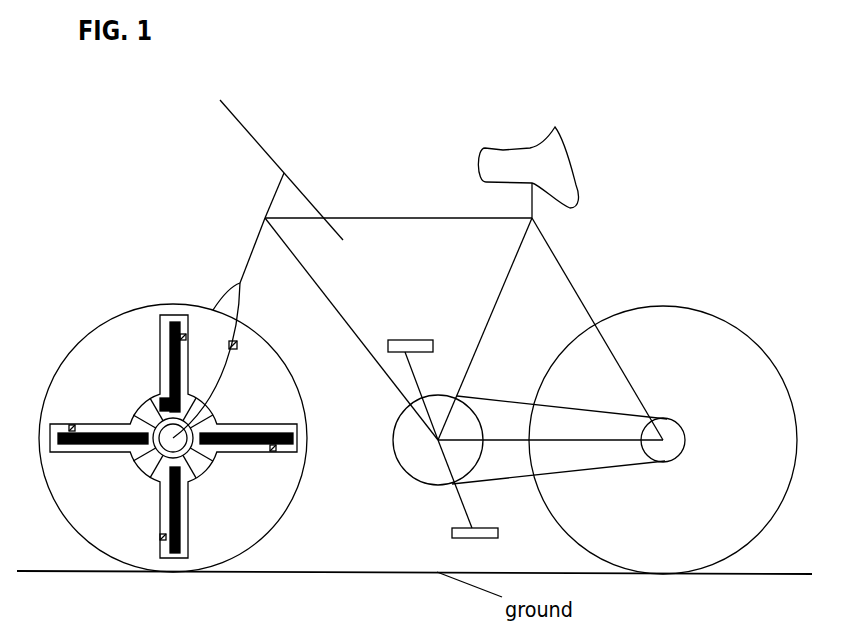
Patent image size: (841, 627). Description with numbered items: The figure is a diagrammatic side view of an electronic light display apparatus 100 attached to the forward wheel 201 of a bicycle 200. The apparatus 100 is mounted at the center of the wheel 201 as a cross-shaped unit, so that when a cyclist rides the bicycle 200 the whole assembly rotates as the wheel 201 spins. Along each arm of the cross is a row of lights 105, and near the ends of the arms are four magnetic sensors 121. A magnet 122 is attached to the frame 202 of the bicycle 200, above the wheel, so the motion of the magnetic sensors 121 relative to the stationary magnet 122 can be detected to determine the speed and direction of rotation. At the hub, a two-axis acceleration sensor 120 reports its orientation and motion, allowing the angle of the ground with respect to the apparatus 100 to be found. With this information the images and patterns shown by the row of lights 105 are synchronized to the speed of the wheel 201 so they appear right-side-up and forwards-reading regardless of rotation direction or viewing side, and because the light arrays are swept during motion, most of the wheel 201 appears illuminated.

The electronic light display apparatus 100 is at (107, 423).
The row of lights 105 is at (182, 527).
The 2-axis acceleration sensor 120 is at (163, 403).
The magnetic sensors 121 is at (72, 426).
The magnet 122 is at (229, 341).
The bicycle 200 is at (373, 212).
The forward wheel 201 is at (285, 513).
The frame 202 is at (345, 313).